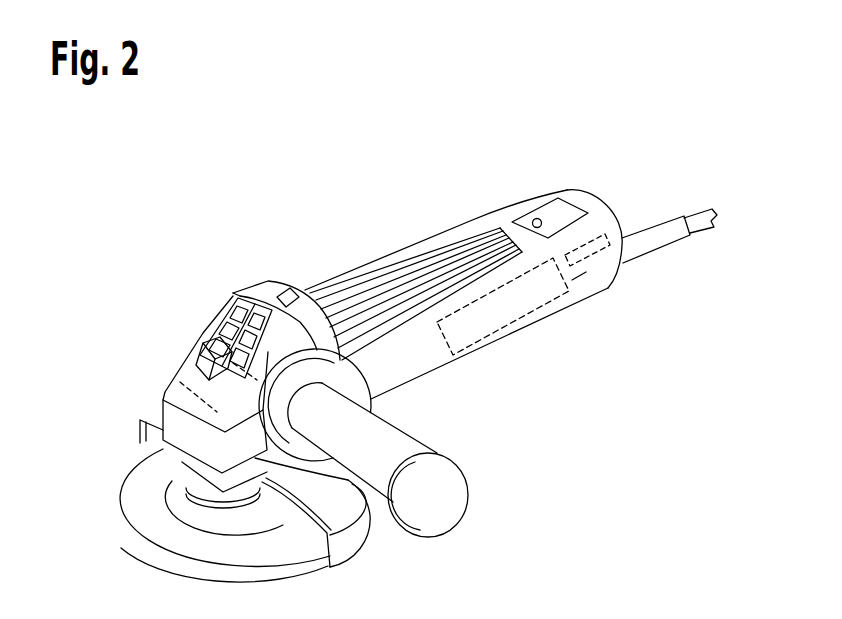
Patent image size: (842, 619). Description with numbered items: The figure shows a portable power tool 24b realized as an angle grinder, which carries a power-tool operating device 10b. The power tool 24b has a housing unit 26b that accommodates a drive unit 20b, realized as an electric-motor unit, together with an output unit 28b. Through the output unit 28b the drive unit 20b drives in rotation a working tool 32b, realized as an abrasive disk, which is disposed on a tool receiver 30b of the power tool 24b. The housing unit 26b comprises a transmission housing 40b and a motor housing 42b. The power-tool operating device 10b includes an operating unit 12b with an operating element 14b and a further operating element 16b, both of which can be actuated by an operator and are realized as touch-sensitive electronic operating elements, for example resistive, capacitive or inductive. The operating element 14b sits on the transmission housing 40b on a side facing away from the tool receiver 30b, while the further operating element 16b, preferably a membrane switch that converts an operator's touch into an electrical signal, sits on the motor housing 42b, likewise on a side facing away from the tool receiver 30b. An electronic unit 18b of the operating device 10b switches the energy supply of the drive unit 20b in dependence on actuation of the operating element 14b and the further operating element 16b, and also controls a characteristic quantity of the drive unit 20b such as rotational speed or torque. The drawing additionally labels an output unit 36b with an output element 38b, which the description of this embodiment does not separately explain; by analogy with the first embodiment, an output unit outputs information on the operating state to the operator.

The power-tool operating device 10b is at (188, 184).
The operating unit 12b is at (322, 216).
The operating element 14b is at (292, 284).
The further operating element 16b is at (393, 285).
The electronic unit 18b is at (589, 256).
The drive unit 20b is at (510, 310).
The power tool 24b is at (587, 136).
The housing unit 26b is at (631, 190).
The output unit 28b is at (182, 368).
The tool receiver 30b is at (185, 470).
The working tool 32b is at (160, 528).
The operating panel 36b is at (552, 214).
The operating element 38b is at (533, 218).
The transmission housing 40b is at (173, 423).
The motor housing 42b is at (579, 284).